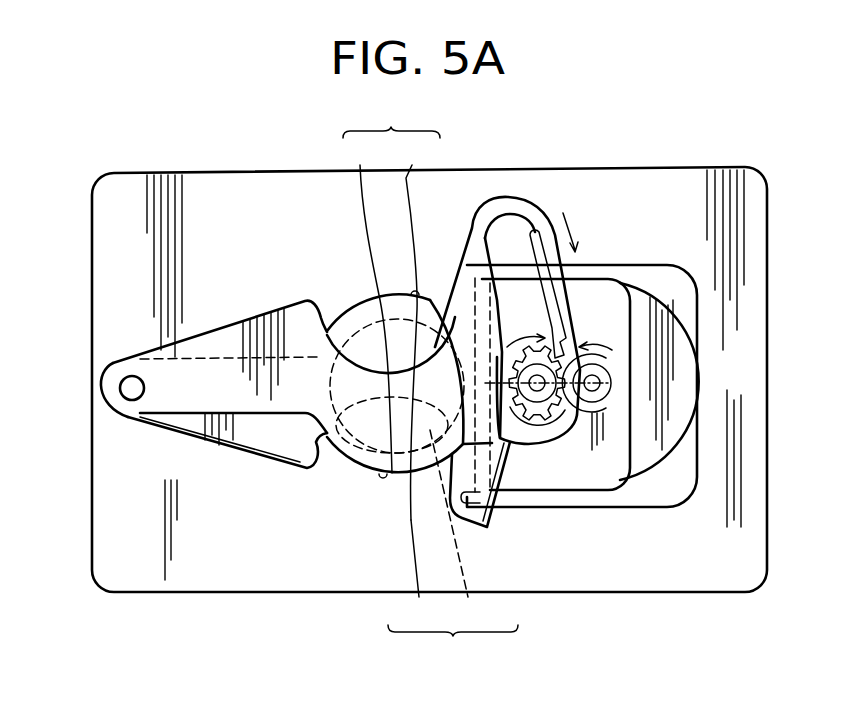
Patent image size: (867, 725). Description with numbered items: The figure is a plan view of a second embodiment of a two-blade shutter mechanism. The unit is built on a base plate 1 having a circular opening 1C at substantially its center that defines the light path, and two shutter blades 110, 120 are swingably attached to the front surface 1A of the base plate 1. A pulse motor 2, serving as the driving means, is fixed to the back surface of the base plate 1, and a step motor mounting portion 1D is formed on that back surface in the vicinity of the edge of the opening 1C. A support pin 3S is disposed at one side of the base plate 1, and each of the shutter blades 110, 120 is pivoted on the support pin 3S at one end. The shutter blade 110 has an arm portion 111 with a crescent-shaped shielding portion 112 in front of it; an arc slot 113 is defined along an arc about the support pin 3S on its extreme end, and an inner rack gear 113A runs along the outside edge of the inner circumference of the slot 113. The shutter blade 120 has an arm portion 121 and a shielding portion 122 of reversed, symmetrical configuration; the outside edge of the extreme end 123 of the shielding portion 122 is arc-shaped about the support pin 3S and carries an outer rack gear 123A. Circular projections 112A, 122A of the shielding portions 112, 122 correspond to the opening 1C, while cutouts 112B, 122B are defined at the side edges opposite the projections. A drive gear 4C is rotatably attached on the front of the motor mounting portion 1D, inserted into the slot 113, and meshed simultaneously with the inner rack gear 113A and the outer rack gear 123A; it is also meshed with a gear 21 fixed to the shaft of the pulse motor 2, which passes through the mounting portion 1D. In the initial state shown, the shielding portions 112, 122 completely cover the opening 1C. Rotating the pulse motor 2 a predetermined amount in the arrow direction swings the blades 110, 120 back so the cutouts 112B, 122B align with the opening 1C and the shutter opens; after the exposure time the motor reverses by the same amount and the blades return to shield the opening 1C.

The base plate 1 is at (143, 173).
The front surface 1A is at (100, 243).
The circular opening 1C is at (347, 425).
The step motor mounting portion 1D is at (540, 495).
The pulse motor 2 is at (670, 427).
The gear 21 is at (628, 378).
The support pin 3S is at (120, 388).
The drive gear 4C is at (563, 418).
The shutter blade 110 is at (267, 302).
The arm portion 111 is at (215, 350).
The shielding portion 112 is at (391, 122).
The circular projection 112A is at (417, 331).
The cutout 112B is at (366, 307).
The arc slot 113 is at (511, 205).
The inner rack gear 113A is at (537, 227).
The shutter blade 120 is at (265, 462).
The arm portion 121 is at (212, 432).
The shielding portion 122 is at (453, 642).
The circular projection 122A is at (411, 573).
The cutout 122B is at (469, 528).
The extreme end 123 is at (470, 522).
The outer rack gear 123A is at (500, 512).